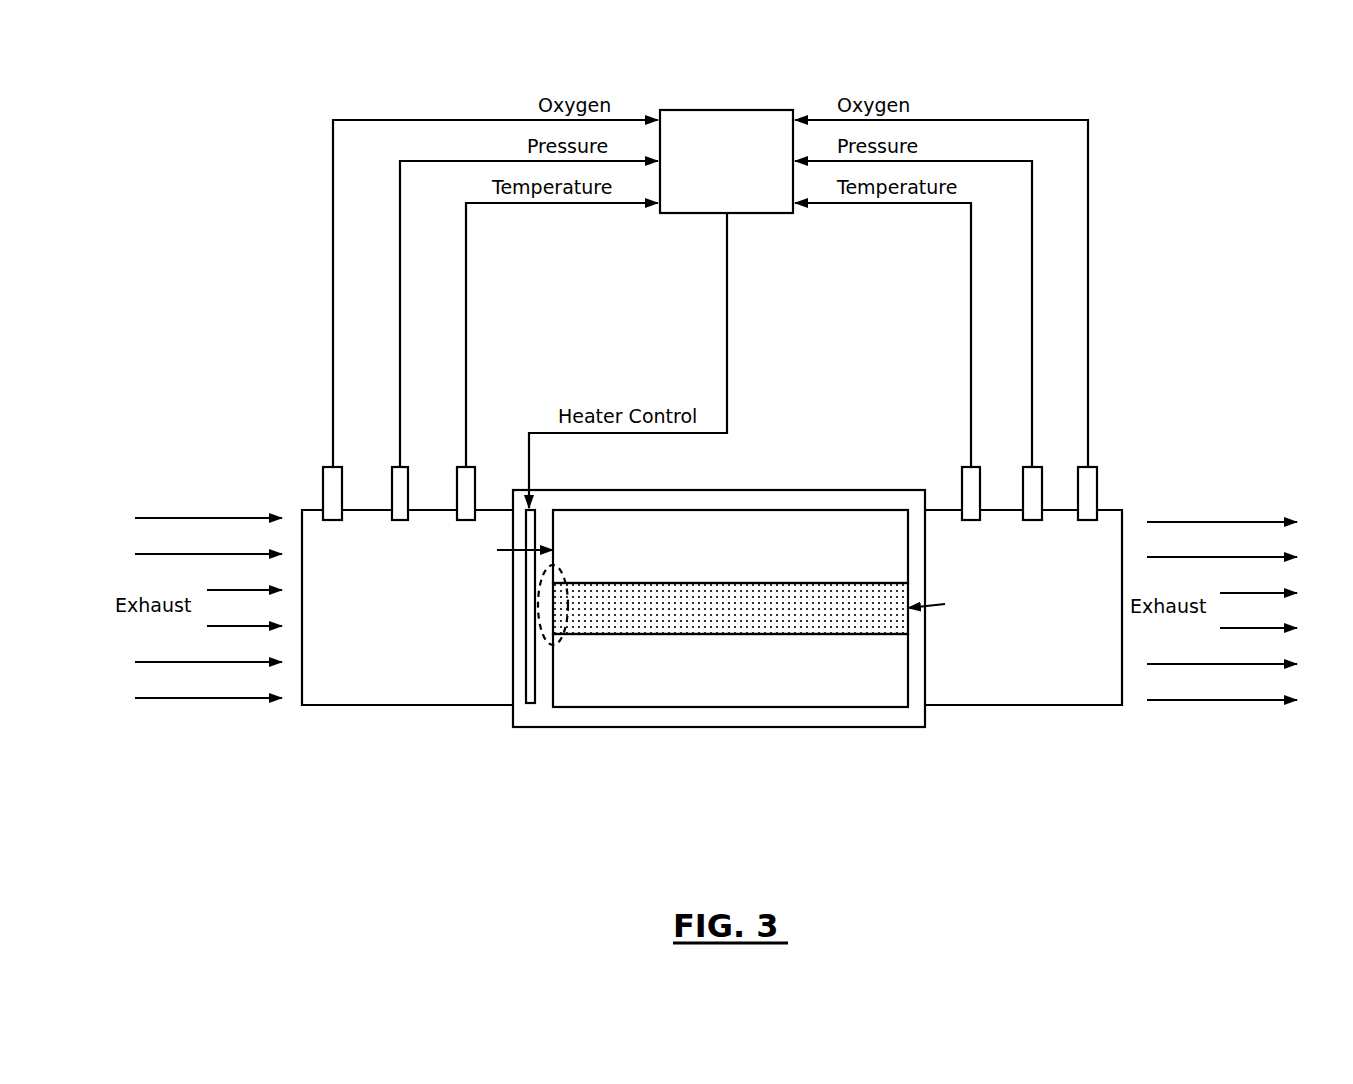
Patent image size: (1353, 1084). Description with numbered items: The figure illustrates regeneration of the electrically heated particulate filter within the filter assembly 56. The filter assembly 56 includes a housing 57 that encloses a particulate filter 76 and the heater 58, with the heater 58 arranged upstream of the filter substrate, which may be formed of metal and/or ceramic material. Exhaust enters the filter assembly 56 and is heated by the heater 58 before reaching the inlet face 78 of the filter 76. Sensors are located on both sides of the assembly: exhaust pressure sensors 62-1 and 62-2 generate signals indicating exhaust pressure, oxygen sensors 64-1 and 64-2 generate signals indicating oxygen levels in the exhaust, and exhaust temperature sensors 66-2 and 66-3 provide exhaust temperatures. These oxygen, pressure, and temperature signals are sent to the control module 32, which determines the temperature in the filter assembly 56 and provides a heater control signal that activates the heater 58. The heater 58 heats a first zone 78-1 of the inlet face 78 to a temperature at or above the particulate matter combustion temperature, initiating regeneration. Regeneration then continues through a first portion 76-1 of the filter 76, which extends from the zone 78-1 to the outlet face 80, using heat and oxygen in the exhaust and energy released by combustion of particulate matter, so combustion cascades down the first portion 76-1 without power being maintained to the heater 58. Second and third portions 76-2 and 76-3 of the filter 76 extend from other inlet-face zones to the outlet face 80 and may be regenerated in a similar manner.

The control module 32 is at (727, 110).
The filter assembly 56 is at (560, 812).
The housing 57 is at (733, 490).
The heater 58 is at (530, 653).
The exhaust pressure sensor 62-1 is at (399, 521).
The exhaust pressure sensor 62-2 is at (1035, 521).
The oxygen sensor 64-1 is at (326, 467).
The oxygen sensor 64-2 is at (1090, 467).
The exhaust temperature sensor 66-2 is at (470, 467).
The exhaust temperature sensor 66-3 is at (968, 467).
The particulate filter 76 is at (730, 620).
The first portion 76-1 is at (660, 610).
The second portion 76-2 is at (797, 537).
The third portion 76-3 is at (797, 677).
The inlet face 78 is at (497, 550).
The first zone 78-1 is at (556, 645).
The outlet face 80 is at (945, 604).